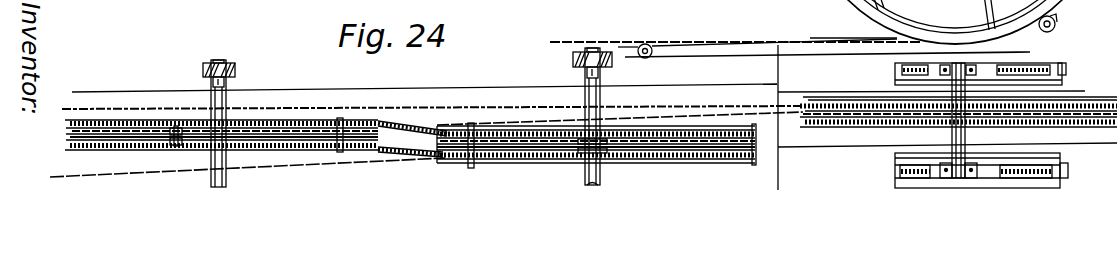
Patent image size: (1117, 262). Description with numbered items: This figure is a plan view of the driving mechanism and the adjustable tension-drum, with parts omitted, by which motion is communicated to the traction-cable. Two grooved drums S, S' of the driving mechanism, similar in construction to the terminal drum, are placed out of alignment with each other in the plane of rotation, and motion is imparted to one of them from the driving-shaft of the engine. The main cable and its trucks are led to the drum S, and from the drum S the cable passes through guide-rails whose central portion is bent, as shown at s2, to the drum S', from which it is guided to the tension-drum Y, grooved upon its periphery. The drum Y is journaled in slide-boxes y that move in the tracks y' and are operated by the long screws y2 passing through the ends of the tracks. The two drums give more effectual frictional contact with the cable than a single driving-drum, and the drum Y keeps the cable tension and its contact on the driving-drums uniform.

The grooved drum S' is at (205, 141).
The bent central portion of guide-rails s2 is at (383, 150).
The grooved drum S is at (596, 155).
The tension-drum Y is at (1068, 128).
The slide-boxes y is at (978, 74).
The tracks y' is at (959, 170).
The long screws y2 is at (1066, 76).